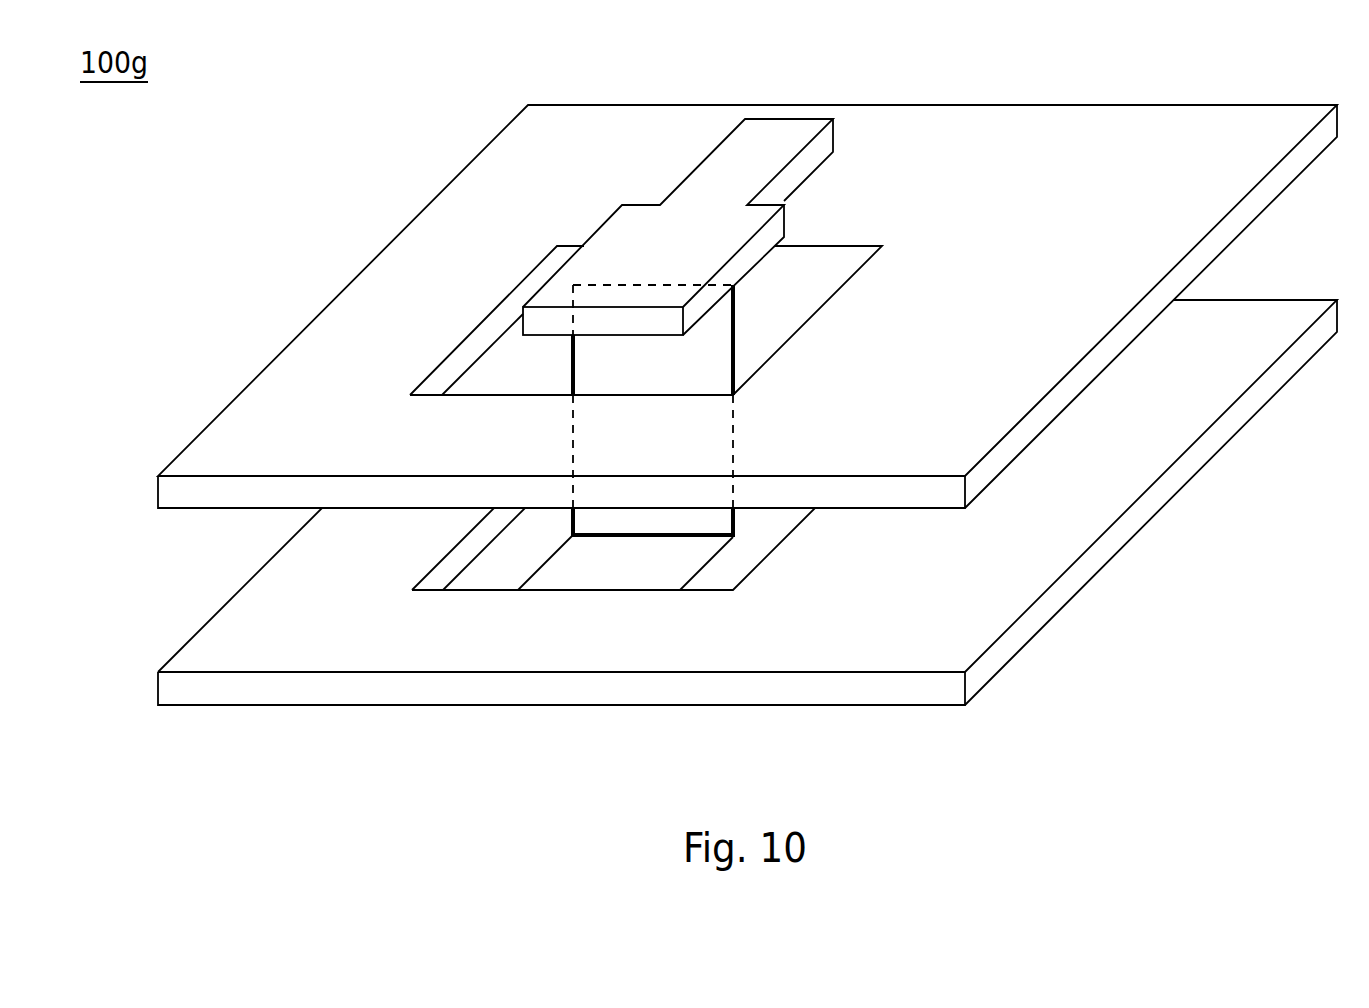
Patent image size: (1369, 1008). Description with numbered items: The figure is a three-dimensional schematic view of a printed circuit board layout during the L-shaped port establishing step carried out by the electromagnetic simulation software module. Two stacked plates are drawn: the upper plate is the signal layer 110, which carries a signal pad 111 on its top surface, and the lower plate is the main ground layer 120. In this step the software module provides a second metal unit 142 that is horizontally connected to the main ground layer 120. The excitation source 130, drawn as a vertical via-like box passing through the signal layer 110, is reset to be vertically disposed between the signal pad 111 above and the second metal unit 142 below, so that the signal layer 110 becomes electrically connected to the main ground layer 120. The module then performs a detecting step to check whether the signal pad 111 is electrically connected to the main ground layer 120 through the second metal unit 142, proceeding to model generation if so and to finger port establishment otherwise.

The signal layer 110 is at (537, 143).
The signal pad 111 is at (617, 232).
The main ground layer 120 is at (275, 620).
The excitation source 130 is at (573, 367).
The second metal unit 142 is at (605, 570).